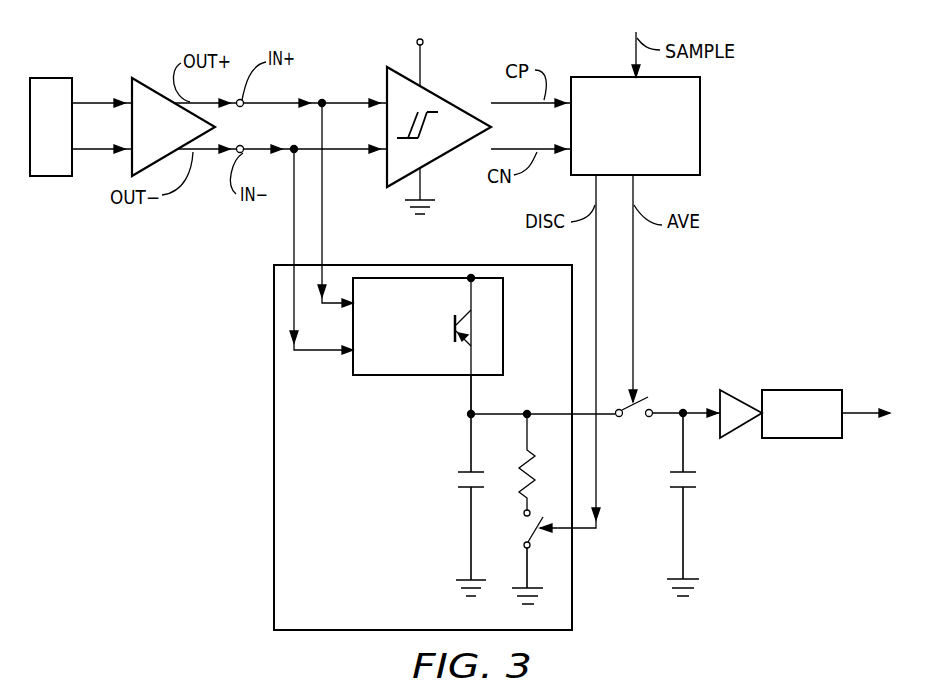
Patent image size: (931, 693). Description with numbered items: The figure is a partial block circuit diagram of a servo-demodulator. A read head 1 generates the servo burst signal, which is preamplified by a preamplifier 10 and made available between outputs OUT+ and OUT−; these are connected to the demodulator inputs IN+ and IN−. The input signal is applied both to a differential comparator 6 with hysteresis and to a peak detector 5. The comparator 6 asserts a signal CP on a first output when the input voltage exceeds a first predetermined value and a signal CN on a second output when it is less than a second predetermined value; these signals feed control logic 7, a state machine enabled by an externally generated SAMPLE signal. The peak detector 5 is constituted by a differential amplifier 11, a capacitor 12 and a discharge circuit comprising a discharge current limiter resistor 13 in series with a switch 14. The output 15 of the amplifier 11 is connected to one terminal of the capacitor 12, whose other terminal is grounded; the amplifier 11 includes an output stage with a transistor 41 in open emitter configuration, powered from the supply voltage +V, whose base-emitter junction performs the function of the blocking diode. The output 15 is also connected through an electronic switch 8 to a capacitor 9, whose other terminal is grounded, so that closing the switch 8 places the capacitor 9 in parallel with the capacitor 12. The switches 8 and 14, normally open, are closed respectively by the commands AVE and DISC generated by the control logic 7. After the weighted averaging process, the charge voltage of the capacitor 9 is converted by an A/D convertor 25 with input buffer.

The read head 1 is at (68, 78).
The preamplifier 10 is at (157, 78).
The differential comparator with hysteresis 6 is at (398, 68).
The control logic 7 is at (700, 92).
The peak detector 5 is at (272, 312).
The differential amplifier 11 is at (405, 376).
The transistor 41 is at (503, 308).
The output 15 is at (472, 383).
The capacitor 12 is at (460, 488).
The discharge current limiter resistor 13 is at (525, 450).
The switch 14 is at (534, 530).
The electronic switch 8 is at (623, 418).
The capacitor 9 is at (690, 488).
The A/D convertor 25 is at (778, 390).